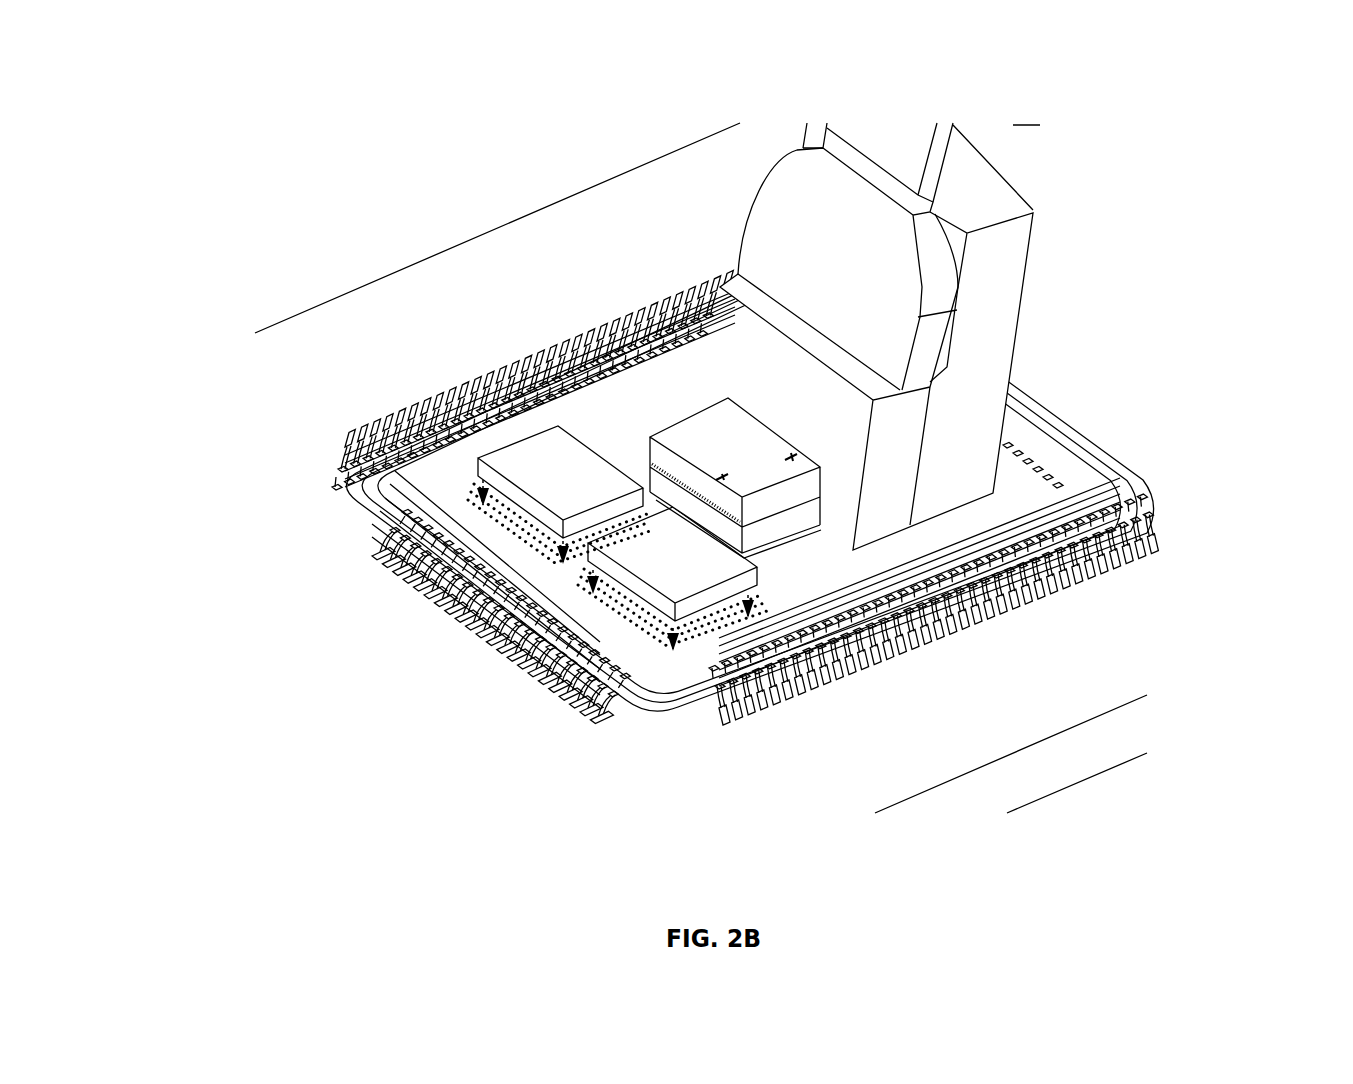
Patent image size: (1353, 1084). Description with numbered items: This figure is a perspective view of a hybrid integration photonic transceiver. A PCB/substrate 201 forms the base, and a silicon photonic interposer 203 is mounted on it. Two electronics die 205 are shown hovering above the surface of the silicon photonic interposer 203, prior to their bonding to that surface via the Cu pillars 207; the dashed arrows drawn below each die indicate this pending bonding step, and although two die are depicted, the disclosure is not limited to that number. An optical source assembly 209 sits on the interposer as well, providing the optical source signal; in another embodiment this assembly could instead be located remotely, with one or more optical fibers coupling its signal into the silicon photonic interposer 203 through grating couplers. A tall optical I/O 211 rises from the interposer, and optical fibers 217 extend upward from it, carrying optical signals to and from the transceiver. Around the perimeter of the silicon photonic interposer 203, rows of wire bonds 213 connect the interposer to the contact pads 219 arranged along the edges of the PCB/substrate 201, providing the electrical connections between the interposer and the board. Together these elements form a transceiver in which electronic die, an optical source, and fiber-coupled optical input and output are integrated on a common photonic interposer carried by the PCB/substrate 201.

The PCB/substrate 201 is at (372, 725).
The silicon photonic interposer 203 is at (1194, 439).
The electronics die 205 is at (641, 528).
The Cu pillars 207 is at (634, 620).
The optical source assembly 209 is at (716, 436).
The optical I/O 211 is at (986, 316).
The wire bonds 213 is at (1279, 570).
The optical fibers 217 is at (938, 156).
The contact pads 219 is at (459, 624).